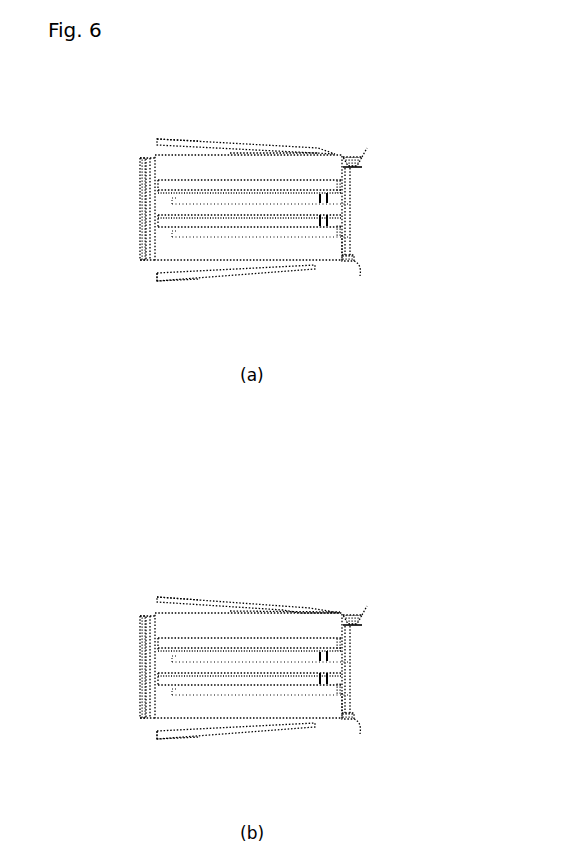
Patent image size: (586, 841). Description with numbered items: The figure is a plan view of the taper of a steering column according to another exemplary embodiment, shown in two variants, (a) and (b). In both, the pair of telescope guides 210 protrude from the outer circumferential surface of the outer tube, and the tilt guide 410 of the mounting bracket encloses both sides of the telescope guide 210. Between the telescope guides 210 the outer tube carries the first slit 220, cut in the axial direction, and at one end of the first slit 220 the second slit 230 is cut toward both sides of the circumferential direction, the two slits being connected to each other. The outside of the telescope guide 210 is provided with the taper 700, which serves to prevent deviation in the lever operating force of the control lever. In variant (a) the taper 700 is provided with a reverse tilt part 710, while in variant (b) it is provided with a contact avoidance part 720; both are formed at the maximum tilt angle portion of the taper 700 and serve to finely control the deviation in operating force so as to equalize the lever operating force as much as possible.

The telescope guide 210 is at (300, 163).
The first slit 220 is at (318, 198).
The second slit 230 is at (138, 200).
The tilt guide 410 is at (238, 153).
The taper 700 is at (220, 145).
The reverse tilt part 710 is at (174, 139).
The contact avoidance part 720 is at (178, 276).